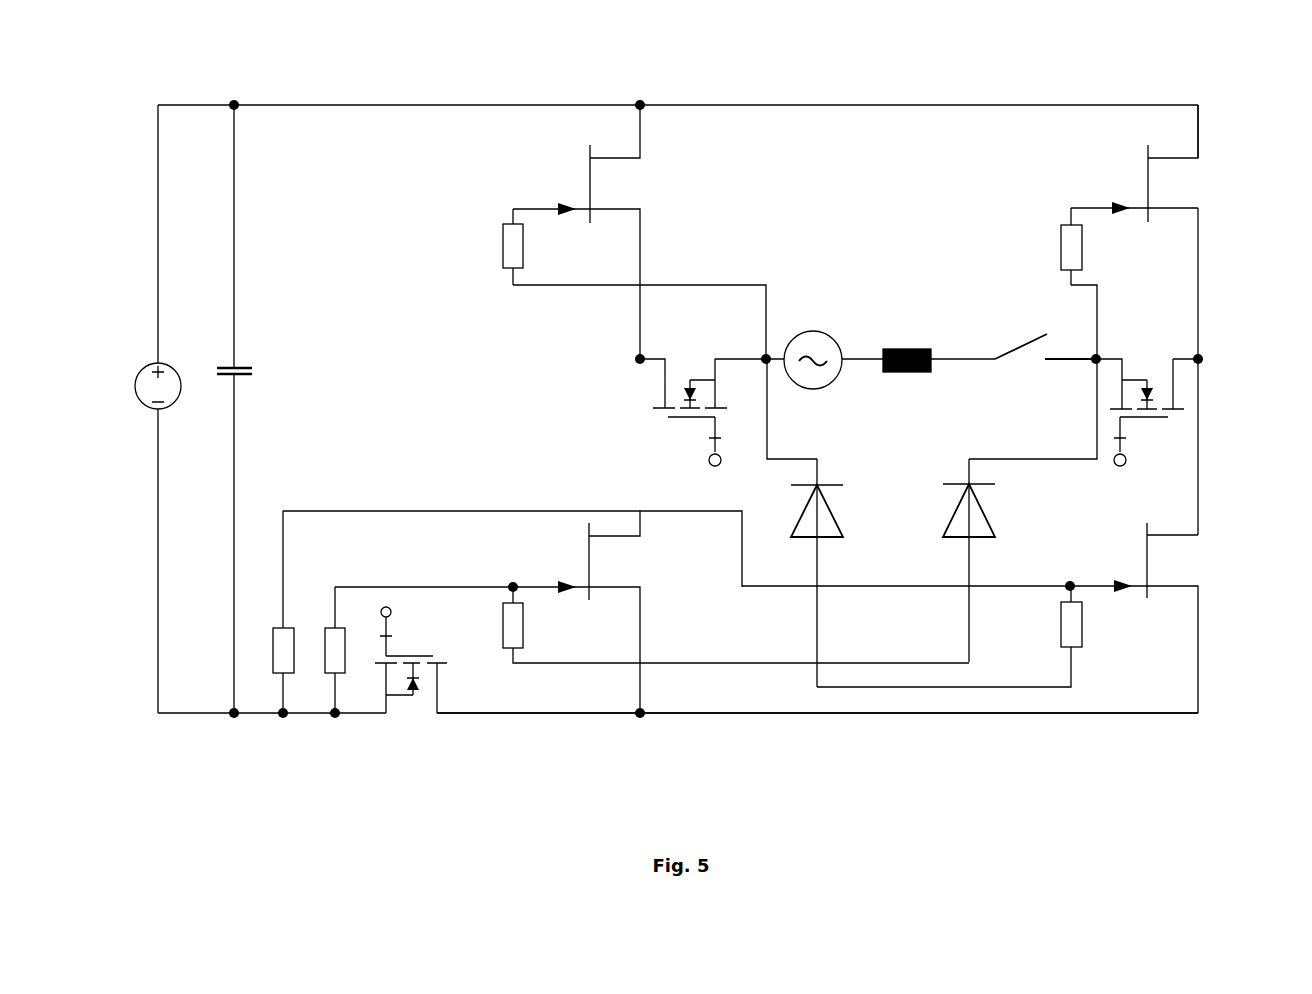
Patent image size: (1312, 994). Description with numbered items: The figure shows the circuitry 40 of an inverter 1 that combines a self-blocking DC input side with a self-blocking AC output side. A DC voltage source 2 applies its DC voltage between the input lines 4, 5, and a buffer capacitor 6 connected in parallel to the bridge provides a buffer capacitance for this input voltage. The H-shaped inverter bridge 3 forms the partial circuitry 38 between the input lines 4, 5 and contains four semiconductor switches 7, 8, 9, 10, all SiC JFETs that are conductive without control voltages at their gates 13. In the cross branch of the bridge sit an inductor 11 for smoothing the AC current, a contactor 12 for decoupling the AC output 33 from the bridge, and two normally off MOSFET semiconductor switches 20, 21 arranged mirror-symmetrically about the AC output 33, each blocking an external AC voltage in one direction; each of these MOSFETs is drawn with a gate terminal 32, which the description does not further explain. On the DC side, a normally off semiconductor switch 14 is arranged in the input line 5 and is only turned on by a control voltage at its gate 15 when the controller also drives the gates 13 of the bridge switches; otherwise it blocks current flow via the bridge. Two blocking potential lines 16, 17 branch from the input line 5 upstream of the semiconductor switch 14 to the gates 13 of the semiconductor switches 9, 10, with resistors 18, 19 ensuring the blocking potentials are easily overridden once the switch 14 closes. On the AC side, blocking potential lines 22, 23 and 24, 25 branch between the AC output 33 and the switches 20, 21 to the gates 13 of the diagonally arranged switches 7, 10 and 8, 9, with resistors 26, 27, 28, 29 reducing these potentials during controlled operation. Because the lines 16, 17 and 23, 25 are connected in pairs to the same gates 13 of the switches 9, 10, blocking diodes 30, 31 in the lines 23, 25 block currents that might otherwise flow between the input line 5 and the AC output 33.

The inverter 1 is at (1220, 222).
The DC voltage source 2 is at (150, 410).
The inverter bridge 3 is at (1222, 335).
The input line 4 is at (752, 105).
The input line 5 is at (752, 715).
The buffer capacitor 6 is at (228, 377).
The semiconductor switch 7 is at (626, 188).
The semiconductor switch 8 is at (1169, 188).
The semiconductor switch 9 is at (1190, 555).
The semiconductor switch 10 is at (631, 570).
The inductor 11 is at (902, 372).
The contactor 12 is at (1033, 372).
The gate 13 is at (1108, 586).
The normally off semiconductor switch 14 is at (415, 720).
The gate 15 is at (383, 620).
The blocking potential line 16 is at (286, 688).
The blocking potential line 17 is at (333, 690).
The resistor 18 is at (280, 652).
The resistor 19 is at (333, 650).
The semiconductor switch 20 is at (697, 340).
The semiconductor switch 21 is at (1153, 362).
The blocking potential line 22 is at (752, 285).
The blocking potential line 23 is at (772, 462).
The blocking potential line 24 is at (1072, 283).
The blocking potential line 25 is at (1077, 462).
The resistor 26 is at (503, 250).
The resistor 27 is at (1077, 647).
The resistor 28 is at (1062, 245).
The resistor 29 is at (507, 632).
The blocking diode 30 is at (833, 537).
The blocking diode 31 is at (983, 537).
The gate terminal 32 is at (710, 456).
The AC output 33 is at (833, 333).
The partial circuitry 38 is at (1222, 433).
The circuitry 40 is at (1240, 124).